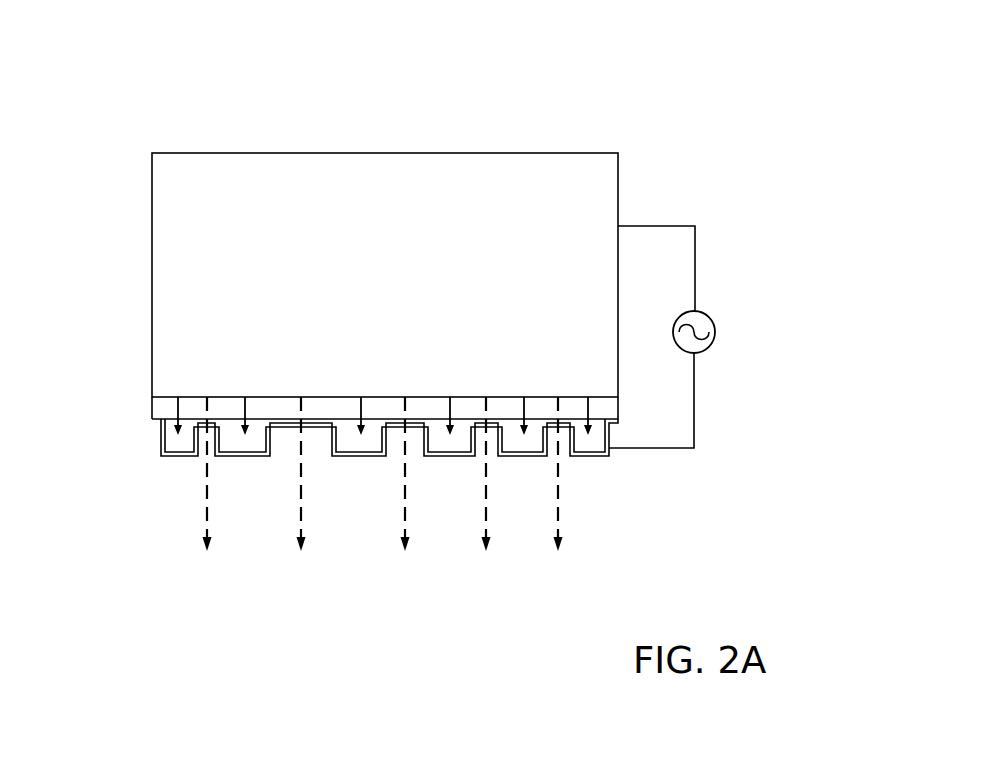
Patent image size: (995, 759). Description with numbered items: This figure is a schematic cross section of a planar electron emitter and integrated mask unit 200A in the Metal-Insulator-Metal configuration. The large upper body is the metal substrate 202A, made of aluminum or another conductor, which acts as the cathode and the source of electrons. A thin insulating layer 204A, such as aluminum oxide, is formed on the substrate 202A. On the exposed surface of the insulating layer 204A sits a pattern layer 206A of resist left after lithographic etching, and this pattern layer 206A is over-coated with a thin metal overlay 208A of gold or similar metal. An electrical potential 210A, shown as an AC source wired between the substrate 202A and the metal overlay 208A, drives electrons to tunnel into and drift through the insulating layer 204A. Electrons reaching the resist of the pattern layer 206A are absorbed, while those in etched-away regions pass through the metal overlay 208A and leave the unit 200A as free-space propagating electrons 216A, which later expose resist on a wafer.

The planar electron emitter and integrated mask unit 200A is at (636, 103).
The metal substrate 202A is at (200, 207).
The thin insulating layer 204A is at (163, 407).
The pattern layer 206A is at (172, 438).
The thin metal overlay 208A is at (170, 455).
The electrical potential 210A is at (714, 318).
The free-space propagating electrons 216A is at (203, 518).